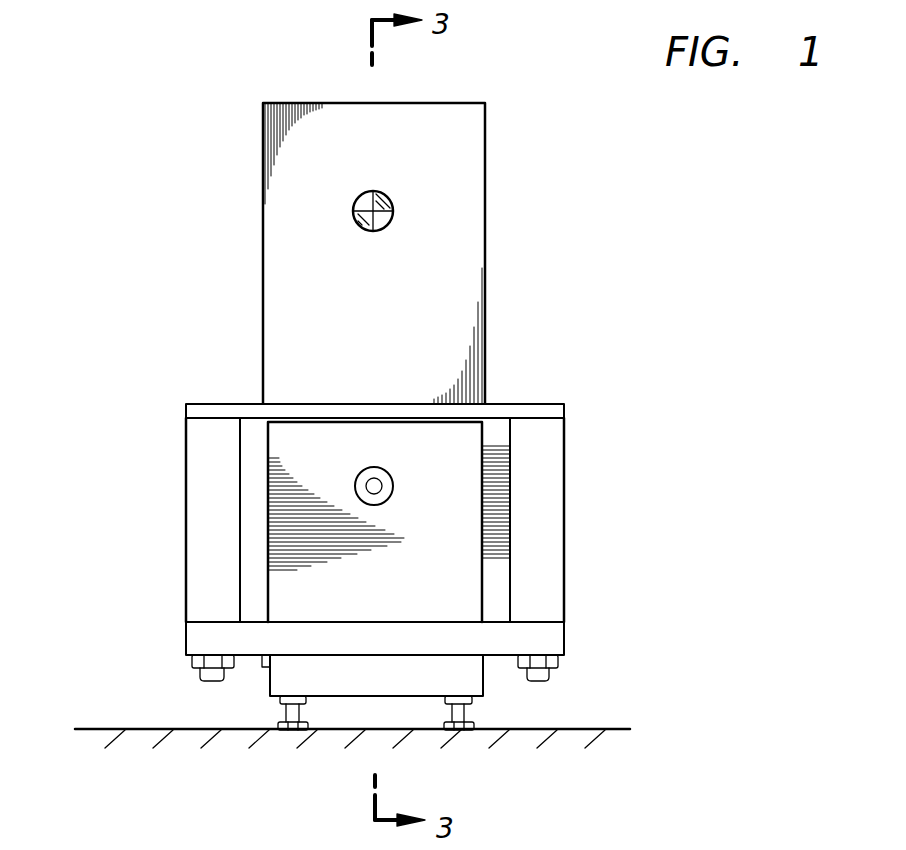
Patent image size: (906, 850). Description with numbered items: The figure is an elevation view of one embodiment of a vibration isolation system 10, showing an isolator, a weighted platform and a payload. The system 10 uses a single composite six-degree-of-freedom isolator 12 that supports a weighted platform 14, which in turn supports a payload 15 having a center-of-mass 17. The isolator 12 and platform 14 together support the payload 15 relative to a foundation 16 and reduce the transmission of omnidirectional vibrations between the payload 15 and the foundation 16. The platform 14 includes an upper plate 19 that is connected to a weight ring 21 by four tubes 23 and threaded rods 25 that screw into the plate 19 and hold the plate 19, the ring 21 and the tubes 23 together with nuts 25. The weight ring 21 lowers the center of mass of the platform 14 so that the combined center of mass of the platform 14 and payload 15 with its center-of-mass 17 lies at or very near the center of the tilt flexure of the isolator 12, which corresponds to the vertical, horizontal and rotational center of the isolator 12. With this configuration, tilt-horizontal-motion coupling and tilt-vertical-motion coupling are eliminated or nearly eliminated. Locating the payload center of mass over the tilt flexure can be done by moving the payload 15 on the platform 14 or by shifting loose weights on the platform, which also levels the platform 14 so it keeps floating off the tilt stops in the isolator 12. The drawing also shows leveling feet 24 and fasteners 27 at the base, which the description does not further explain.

The system 10 is at (212, 322).
The composite 6-DOF isolator 12 is at (282, 444).
The weighted platform 14 is at (567, 440).
The payload 15 is at (262, 203).
The foundation 16 is at (95, 727).
The center-of-mass 17 is at (393, 205).
The upper plate 19 is at (527, 411).
The weight ring 21 is at (548, 643).
The tubes 23 is at (212, 540).
The leveling feet 24 is at (300, 718).
The threaded rods and nuts 25 is at (202, 677).
The bolts 27 is at (190, 660).